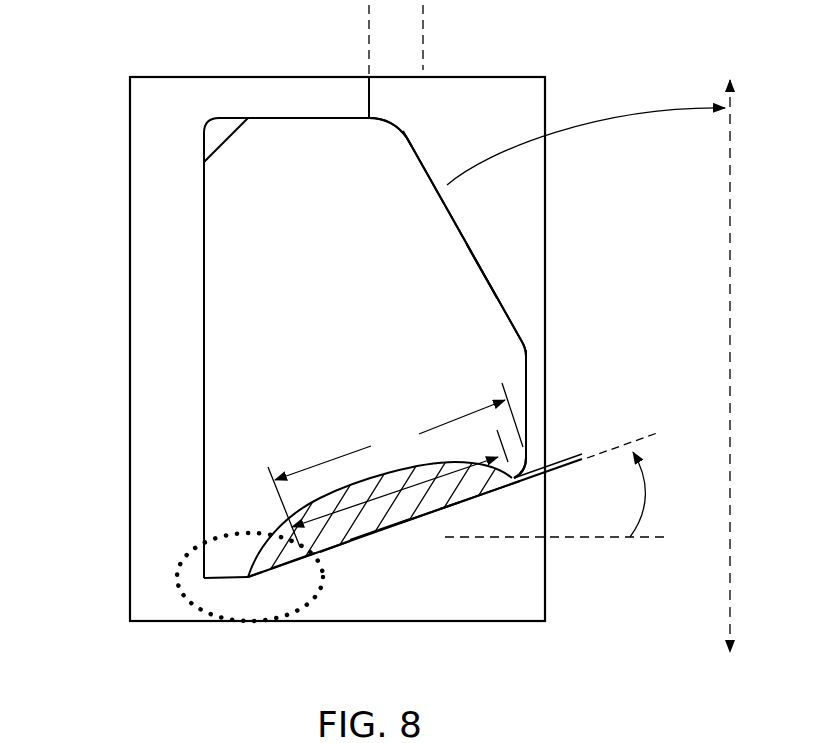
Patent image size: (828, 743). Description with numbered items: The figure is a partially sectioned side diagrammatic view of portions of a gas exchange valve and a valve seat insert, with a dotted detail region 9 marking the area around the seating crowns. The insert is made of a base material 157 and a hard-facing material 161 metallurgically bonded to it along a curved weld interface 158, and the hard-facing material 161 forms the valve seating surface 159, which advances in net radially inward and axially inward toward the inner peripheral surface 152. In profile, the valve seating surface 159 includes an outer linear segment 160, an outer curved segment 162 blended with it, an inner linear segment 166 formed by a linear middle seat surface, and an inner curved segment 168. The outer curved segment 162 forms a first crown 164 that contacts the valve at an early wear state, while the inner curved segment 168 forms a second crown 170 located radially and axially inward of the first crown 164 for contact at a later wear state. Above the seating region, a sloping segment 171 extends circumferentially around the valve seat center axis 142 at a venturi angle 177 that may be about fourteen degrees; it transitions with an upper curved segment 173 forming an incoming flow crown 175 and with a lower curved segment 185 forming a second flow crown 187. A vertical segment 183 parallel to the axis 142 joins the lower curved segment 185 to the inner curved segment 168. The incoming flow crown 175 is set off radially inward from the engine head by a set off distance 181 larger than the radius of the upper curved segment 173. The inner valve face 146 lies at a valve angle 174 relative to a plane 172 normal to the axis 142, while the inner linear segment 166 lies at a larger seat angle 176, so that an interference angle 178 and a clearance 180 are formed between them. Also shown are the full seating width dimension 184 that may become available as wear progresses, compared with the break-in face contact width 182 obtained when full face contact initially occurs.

The detail region 9 is at (178, 558).
The valve seat center axis 142 is at (730, 345).
The inner valve face 146 is at (360, 530).
The inner peripheral surface 152 is at (490, 256).
The base material 157 is at (225, 438).
The curved weld interface 158 is at (276, 523).
The valve seating surface 159 is at (336, 556).
The outer linear segment 160 is at (263, 578).
The hard-facing material 161 is at (384, 518).
The outer curved segment 162 is at (283, 570).
The first crown 164 is at (304, 566).
The inner linear segment 166 is at (436, 514).
The inner curved segment 168 is at (527, 462).
The second crown 170 is at (524, 487).
The sloping segment 171 is at (454, 200).
The plane 172 is at (610, 540).
The upper curved segment 173 is at (414, 135).
The valve angle 174 is at (645, 493).
The incoming flow crown 175 is at (401, 114).
The seat angle 176 is at (485, 504).
The venturi angle 177 is at (597, 110).
The interference angle 178 is at (585, 490).
The clearance 180 is at (508, 495).
The set off distance 181 is at (455, 25).
The break-in face contact width 182 is at (378, 516).
The vertical segment 183 is at (527, 372).
The full seating width dimension 184 is at (395, 465).
The lower curved segment 185 is at (527, 352).
The second flow crown 187 is at (533, 343).